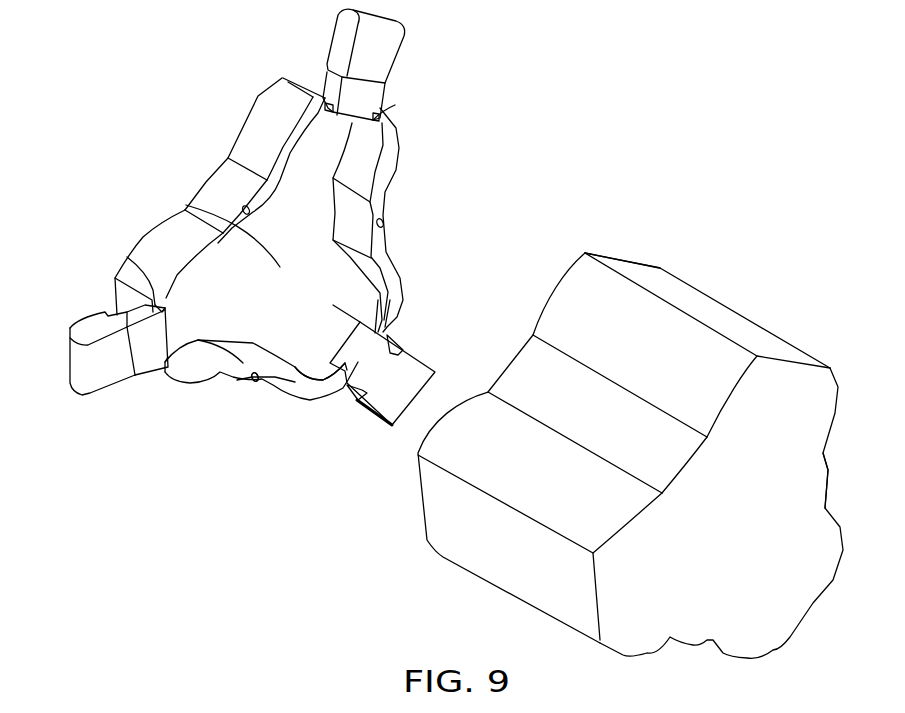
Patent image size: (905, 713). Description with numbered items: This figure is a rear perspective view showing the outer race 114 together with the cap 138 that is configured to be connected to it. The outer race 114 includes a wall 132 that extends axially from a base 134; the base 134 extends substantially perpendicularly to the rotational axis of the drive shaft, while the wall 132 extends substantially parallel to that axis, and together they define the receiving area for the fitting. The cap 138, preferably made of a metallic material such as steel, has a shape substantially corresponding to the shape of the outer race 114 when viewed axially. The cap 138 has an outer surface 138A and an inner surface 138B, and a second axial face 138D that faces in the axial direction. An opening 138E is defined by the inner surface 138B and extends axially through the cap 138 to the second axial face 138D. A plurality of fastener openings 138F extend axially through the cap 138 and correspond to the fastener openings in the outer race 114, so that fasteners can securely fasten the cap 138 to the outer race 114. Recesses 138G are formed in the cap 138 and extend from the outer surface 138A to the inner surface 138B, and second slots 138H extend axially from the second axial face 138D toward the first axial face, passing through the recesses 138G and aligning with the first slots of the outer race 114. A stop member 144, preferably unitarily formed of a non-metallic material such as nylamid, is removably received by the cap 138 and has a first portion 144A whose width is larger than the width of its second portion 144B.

The outer race 114 is at (723, 302).
The wall 132 is at (533, 373).
The base 134 is at (785, 487).
The cap 138 is at (271, 269).
The outer surface 138A is at (270, 118).
The inner surface 138B is at (362, 160).
The second axial face 138D is at (192, 388).
The opening 138E is at (186, 206).
The fastener openings 138F is at (263, 382).
The recesses 138G is at (348, 337).
The second slots 138H is at (127, 257).
The stop member 144 is at (405, 31).
The first portion 144A is at (70, 362).
The second portion 144B is at (384, 95).